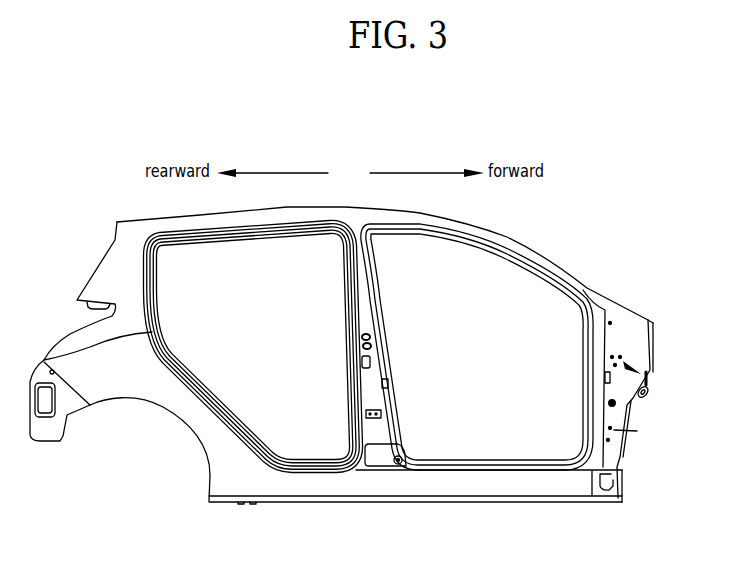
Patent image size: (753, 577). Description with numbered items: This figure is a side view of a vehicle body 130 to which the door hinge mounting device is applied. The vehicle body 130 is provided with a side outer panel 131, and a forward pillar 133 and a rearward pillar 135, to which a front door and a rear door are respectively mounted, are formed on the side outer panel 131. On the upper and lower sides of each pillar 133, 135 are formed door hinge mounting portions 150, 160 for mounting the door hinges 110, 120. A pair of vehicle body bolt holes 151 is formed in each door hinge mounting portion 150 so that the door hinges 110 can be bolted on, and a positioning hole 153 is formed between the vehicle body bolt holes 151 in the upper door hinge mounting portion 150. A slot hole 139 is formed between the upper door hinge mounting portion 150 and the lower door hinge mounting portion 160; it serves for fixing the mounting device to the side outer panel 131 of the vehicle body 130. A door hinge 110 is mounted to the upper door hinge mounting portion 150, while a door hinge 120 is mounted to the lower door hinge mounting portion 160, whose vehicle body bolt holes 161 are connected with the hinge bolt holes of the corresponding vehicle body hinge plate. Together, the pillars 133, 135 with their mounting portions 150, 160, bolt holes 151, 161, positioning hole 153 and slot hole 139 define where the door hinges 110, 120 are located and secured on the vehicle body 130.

The door hinge 110 is at (389, 333).
The door hinge 120 is at (370, 434).
The vehicle body 130 is at (547, 222).
The side outer panel 131 is at (386, 483).
The forward pillar 133 is at (611, 338).
The rearward pillar 135 is at (358, 283).
The slot hole 139 is at (647, 397).
The upper door hinge mounting portion 150 is at (614, 378).
The vehicle body bolt hole 151 is at (619, 358).
The positioning hole 153 is at (605, 368).
The lower door hinge mounting portion 160 is at (637, 431).
The vehicle body bolt hole 161 is at (612, 443).